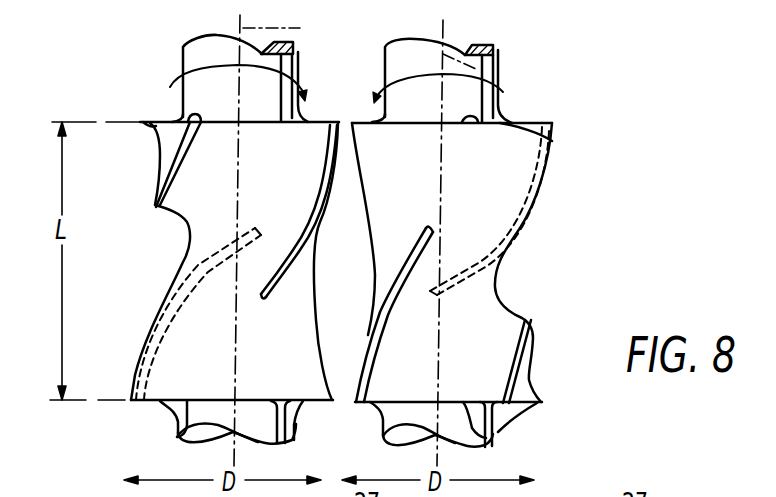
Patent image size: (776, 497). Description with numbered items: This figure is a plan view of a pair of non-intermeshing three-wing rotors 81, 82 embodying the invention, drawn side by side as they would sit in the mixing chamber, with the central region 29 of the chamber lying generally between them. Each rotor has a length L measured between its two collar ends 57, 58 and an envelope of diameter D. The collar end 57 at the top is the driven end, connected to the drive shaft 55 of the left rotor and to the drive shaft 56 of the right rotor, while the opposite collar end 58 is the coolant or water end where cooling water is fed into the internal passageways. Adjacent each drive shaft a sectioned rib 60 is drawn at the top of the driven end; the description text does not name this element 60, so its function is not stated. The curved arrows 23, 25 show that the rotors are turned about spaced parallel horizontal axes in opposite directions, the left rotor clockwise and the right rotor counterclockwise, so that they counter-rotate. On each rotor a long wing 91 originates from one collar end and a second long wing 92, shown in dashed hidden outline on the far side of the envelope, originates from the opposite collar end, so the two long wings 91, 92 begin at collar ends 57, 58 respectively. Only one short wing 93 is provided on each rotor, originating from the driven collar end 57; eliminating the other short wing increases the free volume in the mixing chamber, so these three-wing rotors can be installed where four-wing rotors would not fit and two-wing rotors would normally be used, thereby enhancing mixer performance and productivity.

The arrow 23 is at (304, 92).
The arrow 25 is at (503, 92).
The central region 29 is at (351, 287).
The drive shaft 55 is at (202, 55).
The drive shaft 56 is at (498, 77).
The collar end 57 is at (150, 126).
The collar end 58 is at (170, 424).
The helical rib 60 is at (300, 28).
The three-wing rotor 81 is at (176, 227).
The three-wing rotor 82 is at (511, 258).
The long wing 91 is at (310, 208).
The long wing 92 is at (160, 308).
The short wing 93 is at (176, 167).